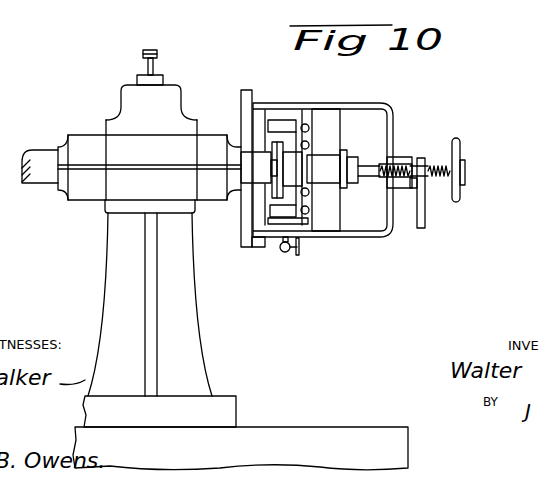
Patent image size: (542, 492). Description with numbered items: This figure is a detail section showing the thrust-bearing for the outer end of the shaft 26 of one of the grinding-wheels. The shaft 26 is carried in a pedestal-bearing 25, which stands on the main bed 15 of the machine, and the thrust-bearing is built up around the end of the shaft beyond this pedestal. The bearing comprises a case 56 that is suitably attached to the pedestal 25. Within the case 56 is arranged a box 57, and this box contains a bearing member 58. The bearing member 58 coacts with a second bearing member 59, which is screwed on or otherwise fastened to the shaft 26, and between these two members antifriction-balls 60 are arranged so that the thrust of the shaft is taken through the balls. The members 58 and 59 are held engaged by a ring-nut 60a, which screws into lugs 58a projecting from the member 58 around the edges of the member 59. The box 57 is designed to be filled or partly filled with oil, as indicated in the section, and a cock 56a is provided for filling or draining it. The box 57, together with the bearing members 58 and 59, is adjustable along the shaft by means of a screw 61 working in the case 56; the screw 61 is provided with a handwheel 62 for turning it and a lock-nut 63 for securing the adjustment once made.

The main bed 15 is at (305, 427).
The pedestal-bearing 25 is at (178, 312).
The shaft 26 is at (46, 174).
The case 56 is at (353, 234).
The cock 56a is at (277, 254).
The box 57 is at (346, 211).
The bearing member 58 is at (322, 229).
The lugs 58a is at (295, 117).
The bearing member 59 is at (302, 230).
The antifriction-balls 60 is at (315, 113).
The ring-nut 60a is at (265, 234).
The screw 61 is at (378, 171).
The handwheel 62 is at (461, 145).
The lock-nut 63 is at (426, 213).